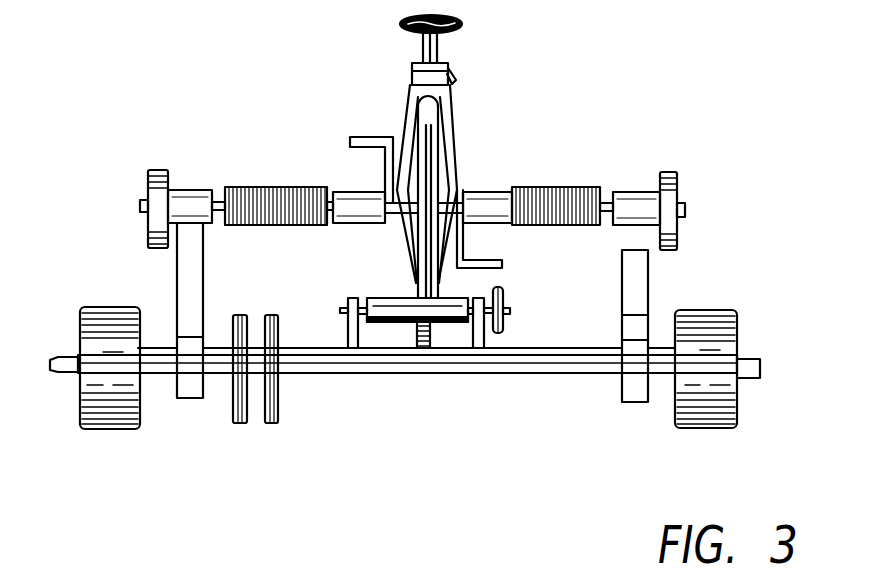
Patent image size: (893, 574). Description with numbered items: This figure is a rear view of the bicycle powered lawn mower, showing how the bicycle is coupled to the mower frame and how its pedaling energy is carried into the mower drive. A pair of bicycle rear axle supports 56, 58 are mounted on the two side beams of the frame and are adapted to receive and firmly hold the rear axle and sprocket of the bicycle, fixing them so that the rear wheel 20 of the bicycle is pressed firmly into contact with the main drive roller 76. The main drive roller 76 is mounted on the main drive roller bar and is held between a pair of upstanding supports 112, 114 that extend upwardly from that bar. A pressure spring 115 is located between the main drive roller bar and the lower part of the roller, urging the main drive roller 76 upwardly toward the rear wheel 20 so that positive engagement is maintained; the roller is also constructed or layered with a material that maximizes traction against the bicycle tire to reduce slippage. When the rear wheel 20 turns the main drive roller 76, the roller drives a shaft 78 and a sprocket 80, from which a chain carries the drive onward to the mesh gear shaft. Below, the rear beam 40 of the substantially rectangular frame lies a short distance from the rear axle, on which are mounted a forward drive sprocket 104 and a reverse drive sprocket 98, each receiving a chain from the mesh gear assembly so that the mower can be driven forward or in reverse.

The rear wheel 20 is at (428, 132).
The bicycle rear axle support 56 is at (197, 188).
The bicycle rear axle support 58 is at (640, 192).
The shaft 78 is at (476, 298).
The sprocket 80 is at (503, 304).
The upstanding support 114 is at (504, 322).
The upstanding support 112 is at (358, 298).
The main drive roller 76 is at (400, 322).
The pressure spring 115 is at (433, 348).
The rear beam 40 is at (560, 375).
The forward drive sprocket 104 is at (233, 397).
The reverse drive sprocket 98 is at (278, 397).